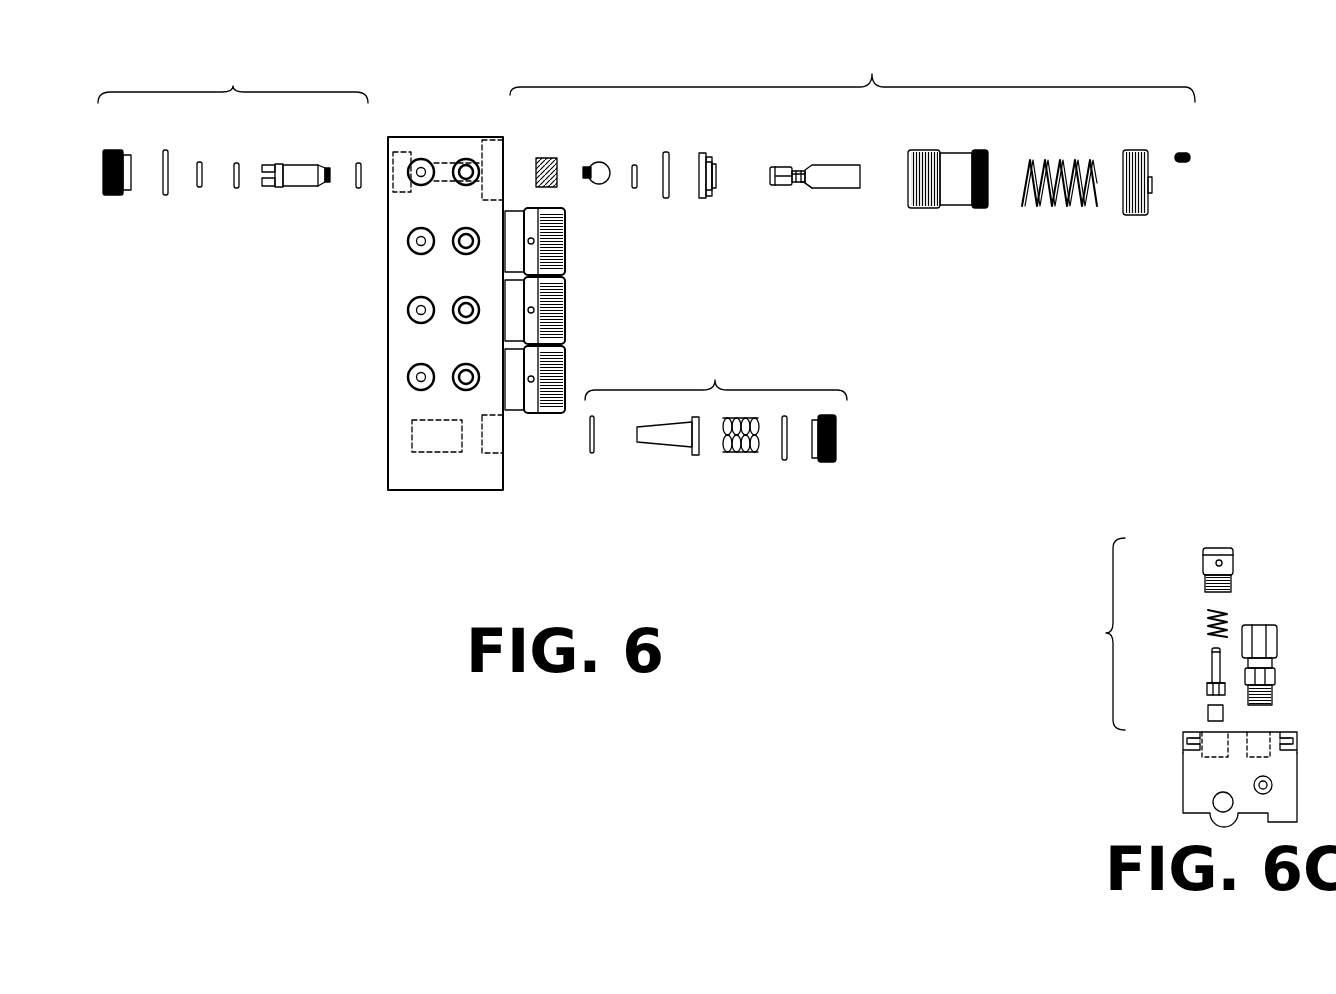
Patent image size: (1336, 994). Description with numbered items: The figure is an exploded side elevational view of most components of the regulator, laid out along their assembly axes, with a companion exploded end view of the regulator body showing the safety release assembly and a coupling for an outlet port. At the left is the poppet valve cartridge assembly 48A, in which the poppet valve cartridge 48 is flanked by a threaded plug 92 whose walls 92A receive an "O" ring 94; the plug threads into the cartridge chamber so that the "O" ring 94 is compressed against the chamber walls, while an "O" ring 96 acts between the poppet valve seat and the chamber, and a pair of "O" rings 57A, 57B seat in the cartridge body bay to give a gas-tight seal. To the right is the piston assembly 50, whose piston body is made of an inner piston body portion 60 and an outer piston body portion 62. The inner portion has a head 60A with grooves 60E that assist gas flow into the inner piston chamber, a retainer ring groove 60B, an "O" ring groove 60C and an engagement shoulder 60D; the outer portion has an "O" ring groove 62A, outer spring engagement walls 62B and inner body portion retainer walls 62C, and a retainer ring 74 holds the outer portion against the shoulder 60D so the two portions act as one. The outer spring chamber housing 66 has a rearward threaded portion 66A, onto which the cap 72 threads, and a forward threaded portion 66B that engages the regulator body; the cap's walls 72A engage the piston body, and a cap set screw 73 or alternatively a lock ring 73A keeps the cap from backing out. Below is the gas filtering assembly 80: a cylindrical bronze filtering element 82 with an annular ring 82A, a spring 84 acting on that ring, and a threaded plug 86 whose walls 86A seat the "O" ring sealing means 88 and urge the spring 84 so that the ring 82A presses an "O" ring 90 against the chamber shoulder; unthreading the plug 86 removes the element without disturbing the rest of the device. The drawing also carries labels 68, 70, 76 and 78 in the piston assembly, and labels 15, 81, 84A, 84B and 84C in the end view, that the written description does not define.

In FIG. 6C, the valve assembly 15 is at (1191, 628).
In FIG. 6, the poppet valve cartridge assembly 48 is at (338, 160).
In FIG. 6, the poppet valve cartridge assembly 48A is at (227, 144).
In FIG. 6, the piston assembly 50 is at (852, 147).
In FIG. 6, the "O" ring 57A is at (199, 160).
In FIG. 6, the "O" ring 57B is at (237, 190).
In FIG. 6, the inner piston body portion 60 is at (835, 163).
In FIG. 6, the head 60A is at (793, 188).
In FIG. 6, the retainer ring groove 60B is at (797, 167).
In FIG. 6, the "O" ring groove 60C is at (802, 187).
In FIG. 6, the outer body portion engagement shoulder 60D is at (814, 186).
In FIG. 6, the grooves 60E is at (778, 187).
In FIG. 6, the outer piston body portion 62 is at (703, 196).
In FIG. 6, the "O" ring groove 62A is at (702, 153).
In FIG. 6, the outer spring engagement walls 62B is at (711, 160).
In FIG. 6, the inner body portion retainer walls 62C is at (713, 182).
In FIG. 6, the outer spring chamber housing 66 is at (955, 153).
In FIG. 6, the rearward threaded portion 66A is at (978, 150).
In FIG. 6, the forward threaded portion 66B is at (928, 150).
In FIG. 6, the spring 68 is at (1043, 162).
In FIG. 6, the spring 70 is at (542, 157).
In FIG. 6, the cap 72 is at (1150, 188).
In FIG. 6, the inner piston body portion engagement walls 72A is at (1145, 150).
In FIG. 6, the cap set screw 73 is at (1183, 153).
In FIG. 6, the lock ring 73A is at (535, 210).
In FIG. 6, the retainer ring 74 is at (598, 162).
In FIG. 6, the pin 76 is at (633, 165).
In FIG. 6, the pin 78 is at (666, 152).
In FIG. 6, the gas filtering assembly 80 is at (712, 431).
In FIG. 6C, the cap 81 is at (1203, 566).
In FIG. 6, the cylindrical bronze filtering element 82 is at (665, 450).
In FIG. 6C, the cylindrical bronze filtering element 82 is at (1207, 620).
In FIG. 6, the annular ring 82A is at (692, 457).
In FIG. 6, the spring 84 is at (740, 452).
In FIG. 6C, the spring 84 is at (1205, 657).
In FIG. 6C, the poppet stem 84A is at (1210, 652).
In FIG. 6C, the poppet nut 84B is at (1227, 690).
In FIG. 6C, the poppet shoulder 84C is at (1207, 684).
In FIG. 6, the threaded plug 86 is at (830, 460).
In FIG. 6C, the threaded plug 86 is at (1208, 712).
In FIG. 6, the walls 86A is at (813, 455).
In FIG. 6, the "O" ring sealing means 88 is at (785, 462).
In FIG. 6C, the "O" ring sealing means 88 is at (1277, 650).
In FIG. 6, the "O" ring 90 is at (588, 448).
In FIG. 6, the threaded plug 92 is at (104, 190).
In FIG. 6, the walls 92A is at (121, 150).
In FIG. 6, the "O" ring 94 is at (165, 150).
In FIG. 6, the "O" ring 96 is at (358, 163).